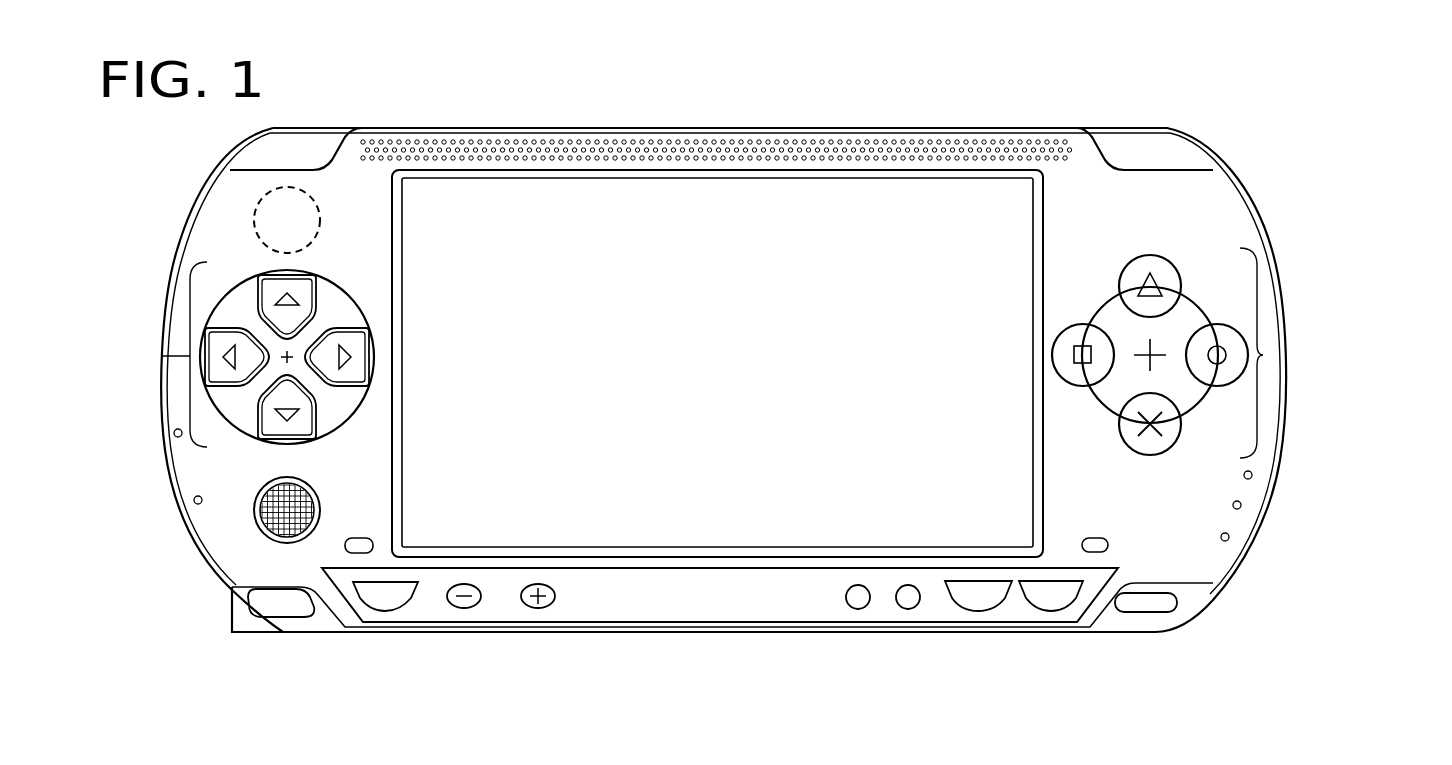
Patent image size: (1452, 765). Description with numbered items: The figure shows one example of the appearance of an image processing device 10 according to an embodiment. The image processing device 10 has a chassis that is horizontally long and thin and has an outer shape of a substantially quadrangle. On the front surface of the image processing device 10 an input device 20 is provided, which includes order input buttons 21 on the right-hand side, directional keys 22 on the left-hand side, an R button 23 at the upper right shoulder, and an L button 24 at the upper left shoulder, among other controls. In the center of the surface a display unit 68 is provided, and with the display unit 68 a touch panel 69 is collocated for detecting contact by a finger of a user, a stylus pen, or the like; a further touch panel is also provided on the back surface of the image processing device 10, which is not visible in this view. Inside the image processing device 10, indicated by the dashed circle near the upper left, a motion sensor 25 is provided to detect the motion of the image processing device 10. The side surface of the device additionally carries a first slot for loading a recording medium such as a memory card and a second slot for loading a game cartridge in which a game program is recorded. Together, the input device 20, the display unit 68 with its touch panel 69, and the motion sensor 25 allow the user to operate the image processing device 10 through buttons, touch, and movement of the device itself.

The image processing device 10 is at (735, 743).
The input device 20 is at (1359, 123).
The order input buttons 21 is at (1263, 355).
The directional keys 22 is at (162, 356).
The R button 23 is at (1190, 150).
The L button 24 is at (253, 154).
The motion sensor 25 is at (237, 220).
The display unit 68 is at (876, 195).
The touch panel 69 is at (870, 195).